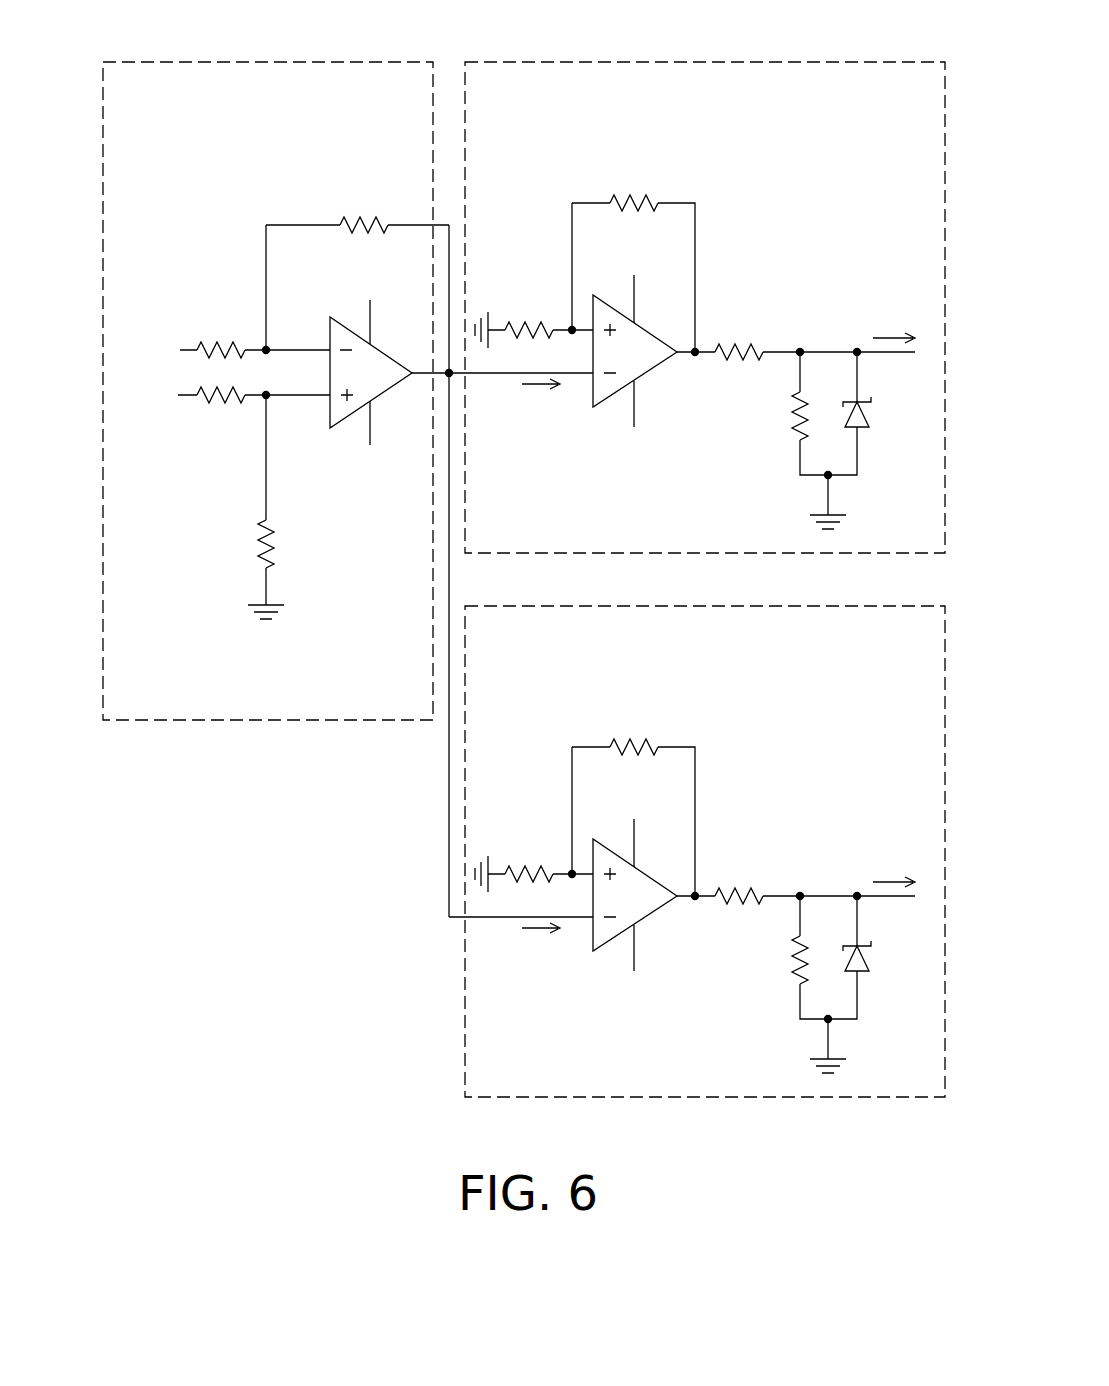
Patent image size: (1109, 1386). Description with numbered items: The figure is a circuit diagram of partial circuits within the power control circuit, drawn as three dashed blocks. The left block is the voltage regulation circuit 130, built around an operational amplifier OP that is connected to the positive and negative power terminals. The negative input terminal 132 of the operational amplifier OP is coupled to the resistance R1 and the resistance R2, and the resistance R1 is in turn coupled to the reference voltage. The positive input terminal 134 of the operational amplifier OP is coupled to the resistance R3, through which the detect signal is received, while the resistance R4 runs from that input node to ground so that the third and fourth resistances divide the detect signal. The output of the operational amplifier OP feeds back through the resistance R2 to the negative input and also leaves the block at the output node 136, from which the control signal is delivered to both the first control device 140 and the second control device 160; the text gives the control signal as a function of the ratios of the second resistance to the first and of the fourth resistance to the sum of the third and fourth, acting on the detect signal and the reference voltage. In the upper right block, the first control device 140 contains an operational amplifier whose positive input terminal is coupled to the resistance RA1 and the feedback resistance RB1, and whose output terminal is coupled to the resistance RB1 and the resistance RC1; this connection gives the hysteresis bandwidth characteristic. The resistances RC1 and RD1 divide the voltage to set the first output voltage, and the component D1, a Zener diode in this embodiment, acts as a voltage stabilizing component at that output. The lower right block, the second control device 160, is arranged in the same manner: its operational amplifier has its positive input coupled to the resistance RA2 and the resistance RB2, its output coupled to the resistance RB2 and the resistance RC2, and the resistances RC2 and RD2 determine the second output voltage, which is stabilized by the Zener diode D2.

The voltage regulation circuit 130 is at (103, 62).
The negative input terminal 132 is at (268, 350).
The positive input terminal 134 is at (268, 397).
The output node 136 is at (449, 375).
The first control device 140 is at (465, 62).
The second control device 160 is at (465, 606).
The resistance R1 is at (220, 343).
The resistance R2 is at (365, 216).
The resistance R3 is at (213, 403).
The resistance R4 is at (257, 547).
The operational amplifier OP is at (392, 392).
The resistance RA1 is at (528, 322).
The resistance RB1 is at (628, 196).
The resistance RC1 is at (750, 343).
The resistance RD1 is at (790, 417).
The voltage stabilizing component D1 is at (872, 405).
The resistance RA2 is at (526, 845).
The resistance RB2 is at (633, 786).
The resistance RC2 is at (745, 864).
The resistance RD2 is at (755, 940).
The voltage stabilizing component D2 is at (890, 935).